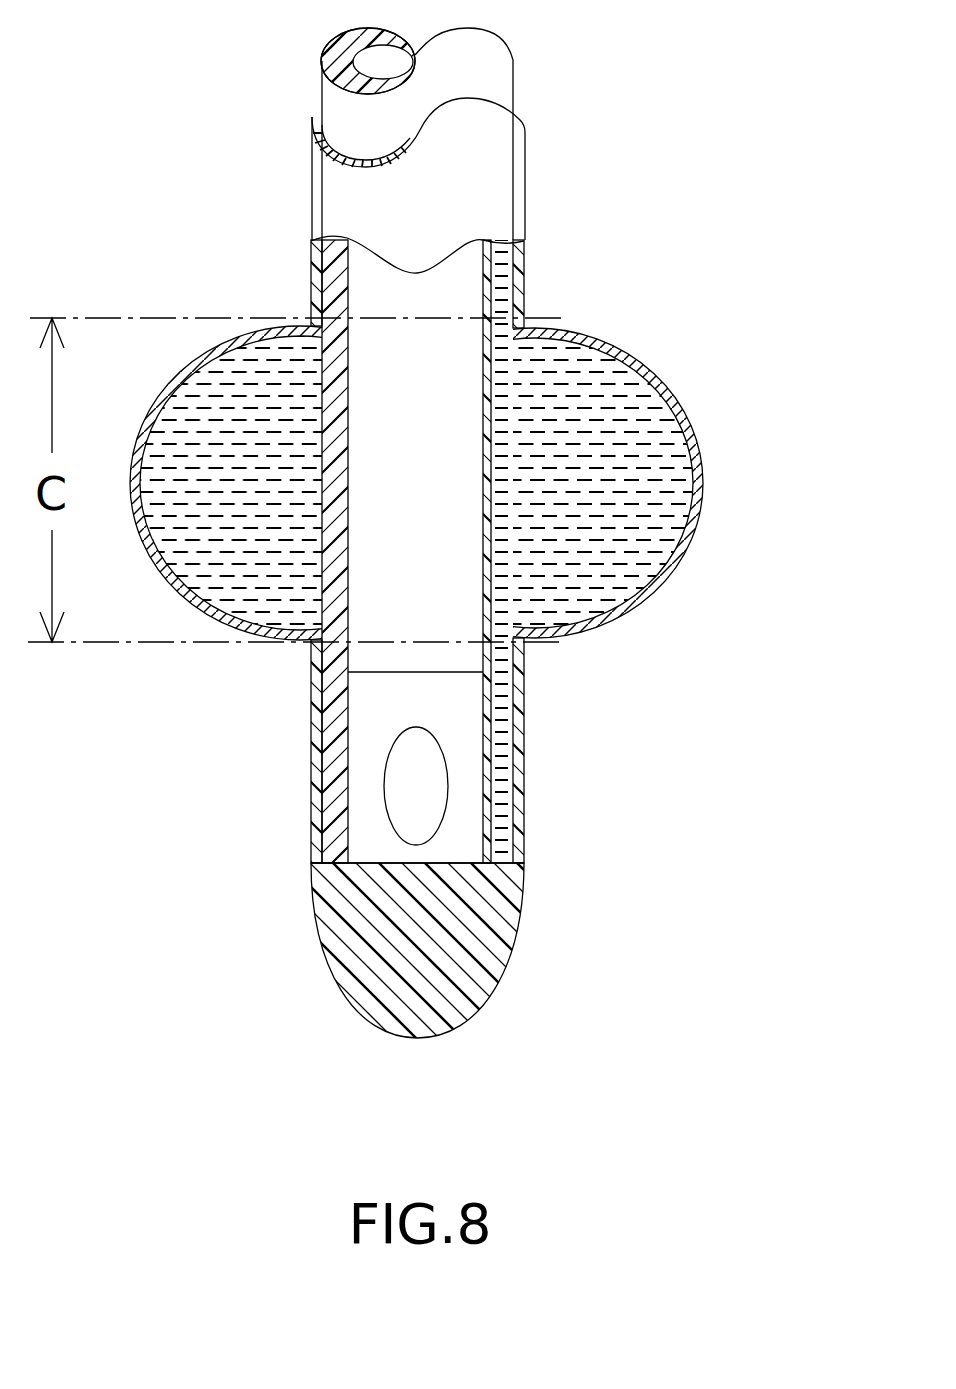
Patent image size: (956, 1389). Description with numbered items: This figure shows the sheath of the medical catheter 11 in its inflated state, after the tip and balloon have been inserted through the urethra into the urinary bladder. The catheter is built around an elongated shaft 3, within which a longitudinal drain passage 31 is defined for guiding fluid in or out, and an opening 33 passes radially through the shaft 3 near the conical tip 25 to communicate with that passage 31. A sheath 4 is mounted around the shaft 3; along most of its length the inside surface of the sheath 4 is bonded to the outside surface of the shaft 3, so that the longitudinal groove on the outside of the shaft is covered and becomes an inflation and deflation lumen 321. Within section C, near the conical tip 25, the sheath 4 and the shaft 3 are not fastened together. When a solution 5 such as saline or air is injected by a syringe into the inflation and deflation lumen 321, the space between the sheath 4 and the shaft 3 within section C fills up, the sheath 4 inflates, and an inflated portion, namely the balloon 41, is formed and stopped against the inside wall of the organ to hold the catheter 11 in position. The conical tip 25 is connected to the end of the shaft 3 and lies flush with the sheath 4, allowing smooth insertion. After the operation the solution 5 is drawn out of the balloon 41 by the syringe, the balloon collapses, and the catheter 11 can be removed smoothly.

The catheter 11 is at (675, 278).
The elongated shaft 3 is at (332, 688).
The drain passage 31 is at (377, 287).
The drainage opening 33 is at (413, 795).
The inflation and deflation lumen 321 is at (500, 797).
The sheath 4 is at (311, 648).
The balloon 41 is at (697, 487).
The solution 5 is at (620, 417).
The conical tip 25 is at (460, 982).